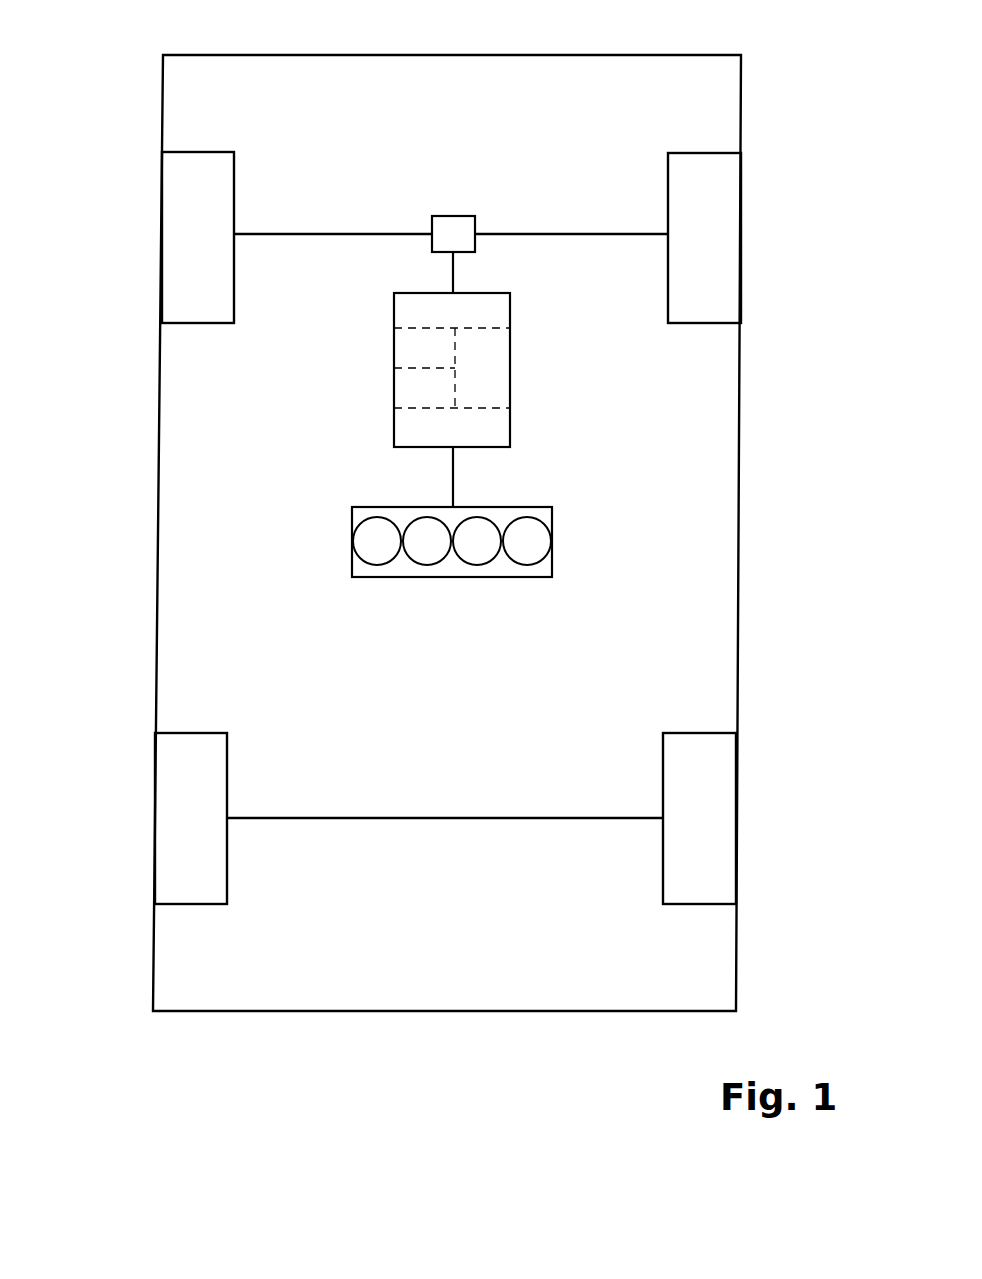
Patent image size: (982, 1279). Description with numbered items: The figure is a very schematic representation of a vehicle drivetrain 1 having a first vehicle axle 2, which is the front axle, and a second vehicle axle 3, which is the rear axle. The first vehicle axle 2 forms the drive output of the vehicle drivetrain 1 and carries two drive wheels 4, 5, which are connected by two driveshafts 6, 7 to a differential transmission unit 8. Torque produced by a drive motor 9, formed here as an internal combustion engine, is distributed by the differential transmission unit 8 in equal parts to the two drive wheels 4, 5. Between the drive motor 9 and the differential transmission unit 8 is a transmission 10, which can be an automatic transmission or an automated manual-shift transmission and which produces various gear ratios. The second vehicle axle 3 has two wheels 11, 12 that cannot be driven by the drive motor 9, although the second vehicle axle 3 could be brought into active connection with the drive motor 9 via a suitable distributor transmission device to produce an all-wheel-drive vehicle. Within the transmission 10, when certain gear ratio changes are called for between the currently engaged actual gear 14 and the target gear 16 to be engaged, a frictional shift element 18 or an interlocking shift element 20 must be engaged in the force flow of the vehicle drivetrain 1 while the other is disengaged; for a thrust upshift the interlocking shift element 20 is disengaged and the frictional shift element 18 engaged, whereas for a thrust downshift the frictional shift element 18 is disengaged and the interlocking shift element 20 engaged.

The vehicle drivetrain 1 is at (95, 410).
The first vehicle axle 2 is at (451, 161).
The second vehicle axle 3 is at (331, 840).
The drive wheel 4 is at (190, 208).
The drive wheel 5 is at (720, 208).
The driveshaft 6 is at (308, 235).
The driveshaft 7 is at (568, 235).
The differential transmission unit 8 is at (455, 237).
The drive motor 9 is at (412, 565).
The transmission 10 is at (449, 372).
The wheel 11 is at (197, 813).
The wheel 12 is at (717, 822).
The actual gear 14 is at (505, 315).
The target gear 16 is at (505, 427).
The frictional shift element 18 is at (400, 350).
The interlocking shift element 20 is at (505, 387).